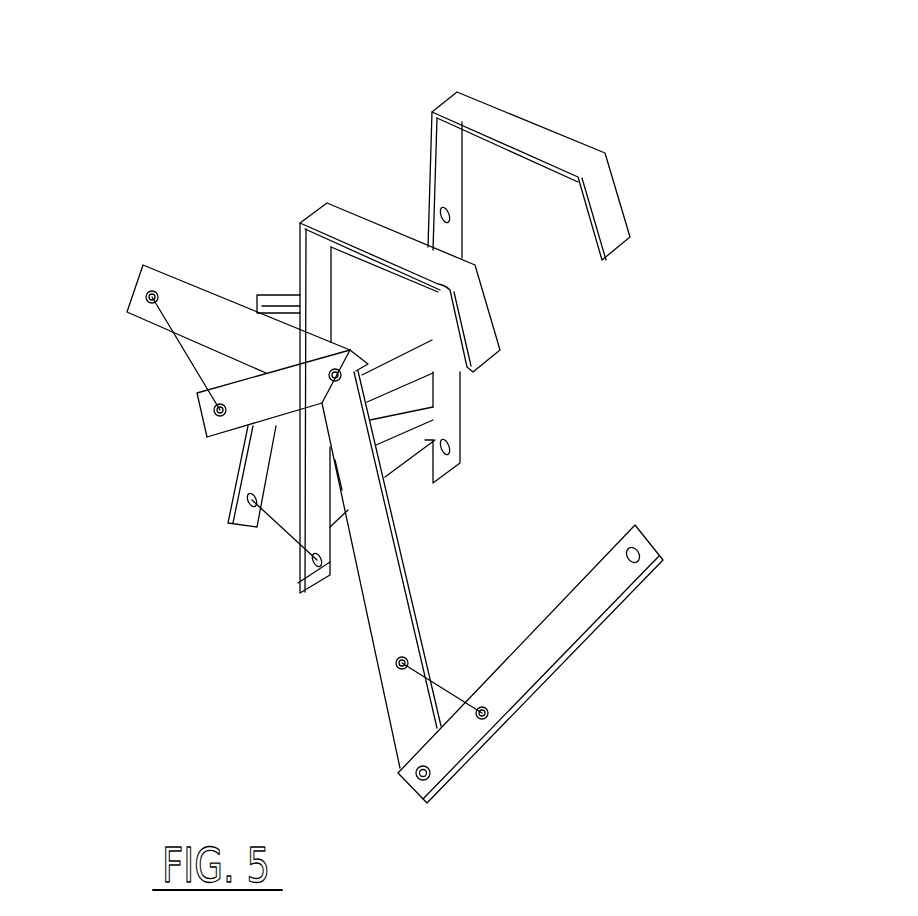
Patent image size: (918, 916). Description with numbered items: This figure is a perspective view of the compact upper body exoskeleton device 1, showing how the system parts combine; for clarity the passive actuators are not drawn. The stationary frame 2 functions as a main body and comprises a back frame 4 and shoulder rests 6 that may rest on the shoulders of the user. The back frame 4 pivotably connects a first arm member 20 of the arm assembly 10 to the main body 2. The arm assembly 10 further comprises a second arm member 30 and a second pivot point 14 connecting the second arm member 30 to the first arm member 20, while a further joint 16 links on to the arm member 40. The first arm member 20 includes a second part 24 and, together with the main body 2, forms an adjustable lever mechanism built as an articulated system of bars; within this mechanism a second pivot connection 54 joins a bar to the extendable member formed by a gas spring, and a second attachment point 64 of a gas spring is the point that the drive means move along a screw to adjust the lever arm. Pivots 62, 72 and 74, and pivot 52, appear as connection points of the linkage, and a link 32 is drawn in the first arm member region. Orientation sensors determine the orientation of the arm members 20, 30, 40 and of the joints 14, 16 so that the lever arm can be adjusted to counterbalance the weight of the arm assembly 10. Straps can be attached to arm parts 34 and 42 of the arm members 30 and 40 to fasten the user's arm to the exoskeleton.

The device 1 is at (682, 193).
The main body 2 is at (422, 90).
The back frame 4 is at (415, 180).
The shoulder rests 6 is at (520, 133).
The arm assembly 10 is at (396, 421).
The second pivot point 14 is at (365, 368).
The joint 16 is at (418, 782).
The first arm member 20 is at (187, 222).
The second part 24 is at (258, 295).
The first lever 32 is at (265, 388).
The pivot 62 is at (138, 283).
The second attachment point 64 is at (210, 420).
The second pivot connection 54 is at (246, 500).
The strut pivot 52 is at (300, 578).
The second arm member 30 is at (425, 562).
The arm part 34 is at (383, 600).
The pivot 72 is at (397, 660).
The pivot 74 is at (486, 722).
The arm member 40 is at (555, 556).
The arm part 42 is at (574, 620).